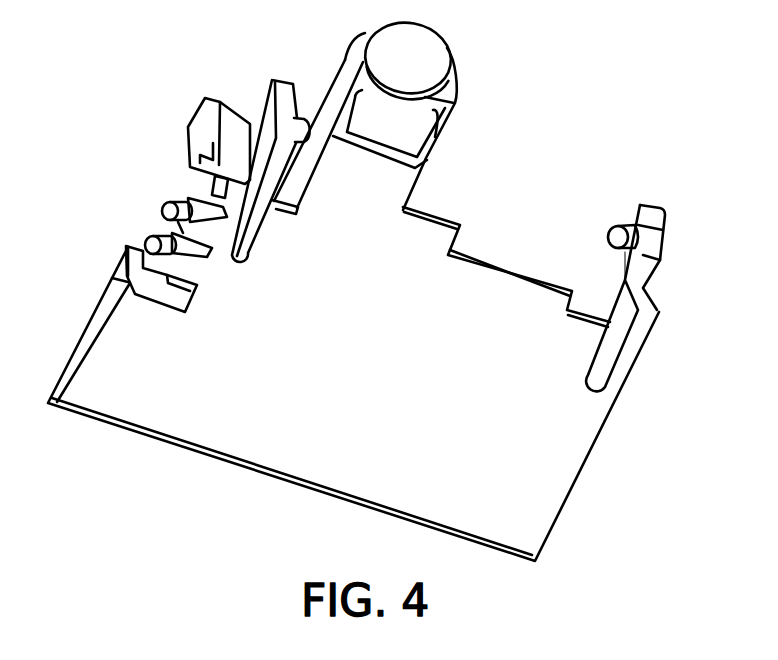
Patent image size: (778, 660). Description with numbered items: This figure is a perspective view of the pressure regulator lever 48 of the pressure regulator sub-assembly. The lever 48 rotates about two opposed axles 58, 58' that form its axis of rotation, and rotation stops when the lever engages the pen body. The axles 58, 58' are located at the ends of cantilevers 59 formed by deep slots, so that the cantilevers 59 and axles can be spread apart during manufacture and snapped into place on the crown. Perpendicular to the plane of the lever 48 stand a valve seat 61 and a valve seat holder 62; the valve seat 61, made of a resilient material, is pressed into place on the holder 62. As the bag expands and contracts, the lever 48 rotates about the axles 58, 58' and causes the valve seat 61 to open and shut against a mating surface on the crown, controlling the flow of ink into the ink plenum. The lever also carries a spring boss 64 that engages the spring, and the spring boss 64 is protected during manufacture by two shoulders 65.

The pressure regulator lever 48 is at (578, 494).
The axle 58 is at (600, 222).
The axle 58' is at (295, 77).
The cantilever 59 is at (266, 112).
The valve seat 61 is at (410, 58).
The valve seat holder 62 is at (400, 188).
The spring boss 64 is at (163, 208).
The shoulder 65 is at (195, 135).